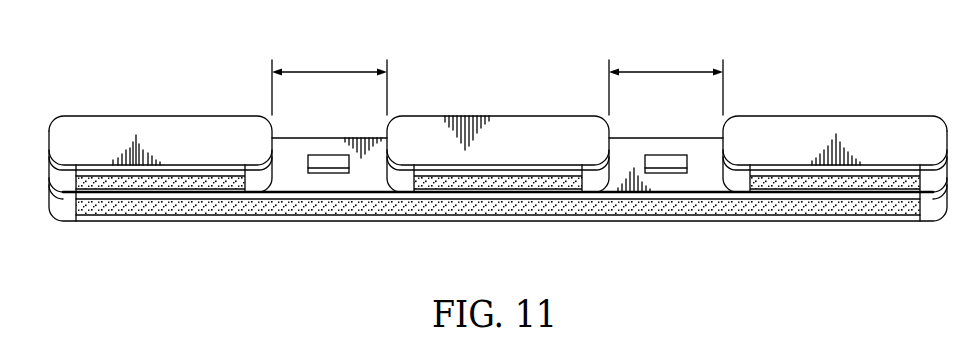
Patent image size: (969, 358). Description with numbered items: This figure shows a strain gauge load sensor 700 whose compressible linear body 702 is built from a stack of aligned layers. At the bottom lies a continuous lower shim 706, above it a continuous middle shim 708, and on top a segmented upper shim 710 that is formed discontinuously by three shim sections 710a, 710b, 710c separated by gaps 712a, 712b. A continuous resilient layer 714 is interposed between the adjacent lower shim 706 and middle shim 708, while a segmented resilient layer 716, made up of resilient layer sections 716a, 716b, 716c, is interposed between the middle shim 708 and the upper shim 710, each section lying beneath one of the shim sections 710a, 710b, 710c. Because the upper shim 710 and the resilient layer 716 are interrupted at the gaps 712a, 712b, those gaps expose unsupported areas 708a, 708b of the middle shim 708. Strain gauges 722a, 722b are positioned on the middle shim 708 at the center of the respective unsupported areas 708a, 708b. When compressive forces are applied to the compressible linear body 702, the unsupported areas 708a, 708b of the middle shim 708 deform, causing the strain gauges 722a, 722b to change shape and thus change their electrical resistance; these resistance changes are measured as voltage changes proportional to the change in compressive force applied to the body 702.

The load sensor 700 is at (770, 65).
The compressible linear body 702 is at (158, 127).
The continuous lower shim 706 is at (118, 218).
The continuous middle shim 708 is at (168, 198).
The unsupported area 708a is at (301, 183).
The unsupported area 708b is at (700, 181).
The segmented upper shim 710 is at (85, 127).
The shim section 710a is at (236, 127).
The shim section 710b is at (523, 125).
The shim section 710c is at (878, 127).
The gap 712a is at (333, 68).
The gap 712b is at (664, 68).
The continuous resilient layer 714 is at (404, 208).
The segmented resilient layer 716 is at (53, 184).
The resilient layer section 716a is at (232, 184).
The resilient layer section 716b is at (507, 185).
The resilient layer section 716c is at (840, 184).
The strain gauge 722a is at (333, 162).
The strain gauge 722b is at (662, 162).